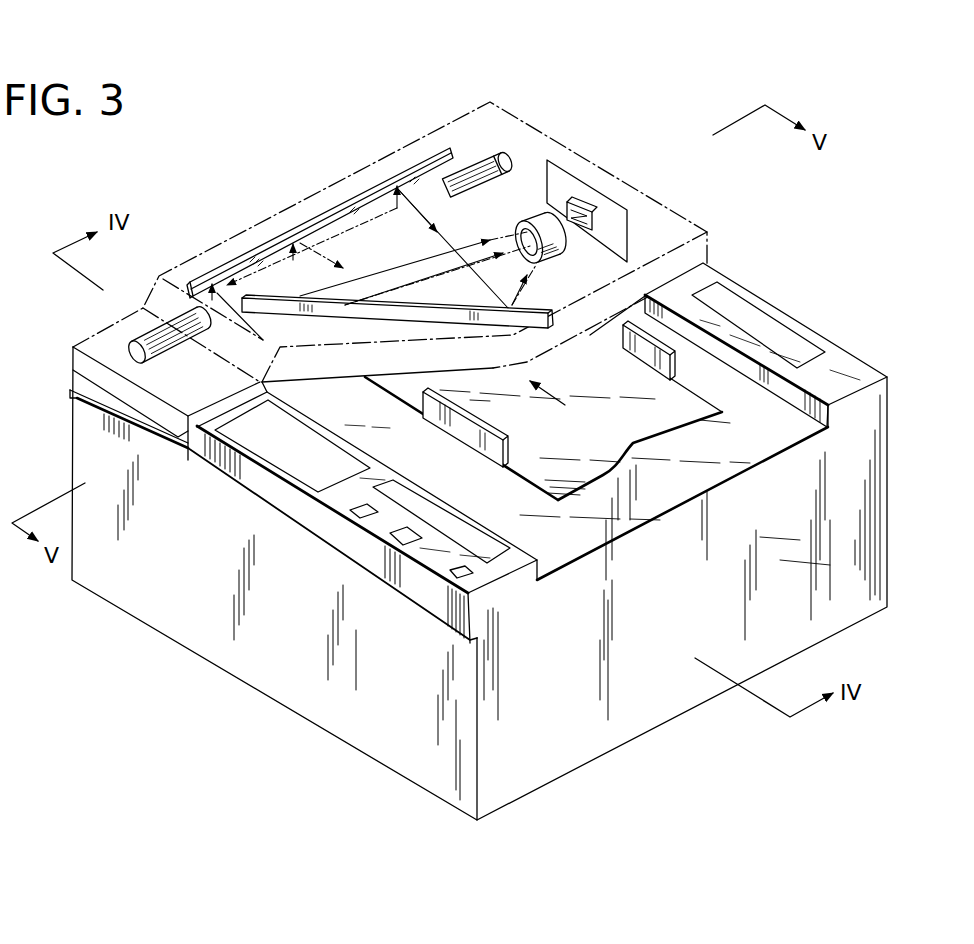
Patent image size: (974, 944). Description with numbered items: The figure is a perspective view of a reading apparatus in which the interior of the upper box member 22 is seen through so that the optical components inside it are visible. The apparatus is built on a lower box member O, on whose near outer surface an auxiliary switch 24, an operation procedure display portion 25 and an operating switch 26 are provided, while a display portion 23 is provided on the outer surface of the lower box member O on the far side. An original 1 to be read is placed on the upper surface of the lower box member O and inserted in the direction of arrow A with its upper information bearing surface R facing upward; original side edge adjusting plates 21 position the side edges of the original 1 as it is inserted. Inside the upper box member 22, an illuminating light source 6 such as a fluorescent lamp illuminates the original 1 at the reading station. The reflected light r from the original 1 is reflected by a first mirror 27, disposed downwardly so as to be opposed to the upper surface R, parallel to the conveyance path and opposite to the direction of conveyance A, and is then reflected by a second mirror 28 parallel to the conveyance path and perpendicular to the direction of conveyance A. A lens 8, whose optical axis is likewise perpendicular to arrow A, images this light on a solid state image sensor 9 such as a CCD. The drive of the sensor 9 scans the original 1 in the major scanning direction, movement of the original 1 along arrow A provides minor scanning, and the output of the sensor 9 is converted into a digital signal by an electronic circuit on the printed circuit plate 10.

The original 1 is at (687, 413).
The illuminating light source 6 is at (480, 163).
The lens 8 is at (563, 250).
The solid state image sensor 9 is at (600, 224).
The printed circuit plate 10 is at (613, 210).
The original side edge adjusting plates 21 is at (457, 430).
The upper box member 22 is at (562, 138).
The display portion 23 is at (753, 317).
The auxiliary switch 24 is at (323, 445).
The operation procedure display portion 25 is at (477, 542).
The operating switch 26 is at (402, 538).
The first mirror 27 is at (227, 262).
The second mirror 28 is at (540, 308).
The reflected light r is at (350, 270).
The direction of conveyance A is at (540, 390).
The upper information bearing surface R is at (558, 444).
The lower box member O is at (887, 530).